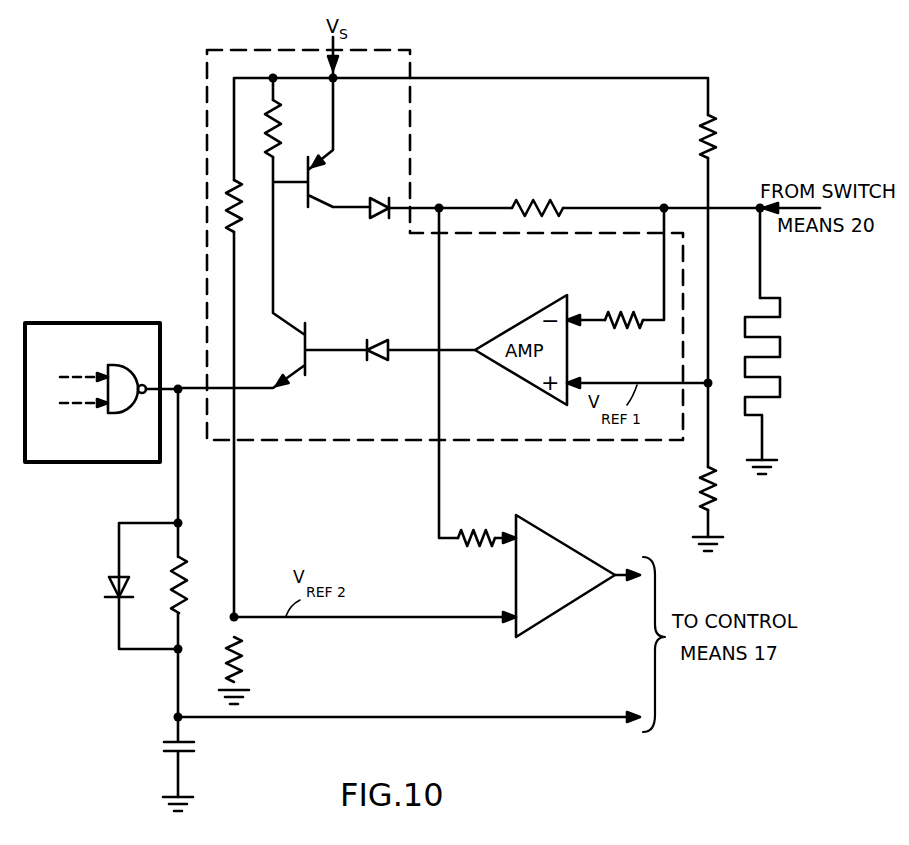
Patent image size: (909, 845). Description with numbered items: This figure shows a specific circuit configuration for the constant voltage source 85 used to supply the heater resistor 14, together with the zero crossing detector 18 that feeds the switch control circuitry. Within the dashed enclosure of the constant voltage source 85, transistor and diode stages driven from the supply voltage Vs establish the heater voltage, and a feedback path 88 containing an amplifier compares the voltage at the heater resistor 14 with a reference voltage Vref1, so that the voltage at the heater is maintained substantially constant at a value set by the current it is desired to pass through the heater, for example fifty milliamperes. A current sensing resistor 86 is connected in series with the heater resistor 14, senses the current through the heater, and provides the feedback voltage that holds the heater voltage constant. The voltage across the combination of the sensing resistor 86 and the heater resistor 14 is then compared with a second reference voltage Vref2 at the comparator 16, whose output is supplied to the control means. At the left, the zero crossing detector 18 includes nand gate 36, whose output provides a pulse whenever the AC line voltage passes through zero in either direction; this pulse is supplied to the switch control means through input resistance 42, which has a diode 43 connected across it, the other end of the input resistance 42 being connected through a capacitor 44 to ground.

The constant voltage source 85 is at (205, 92).
The current sensing resistor 86 is at (534, 203).
The feedback path 88 is at (424, 364).
The heater resistor 14 is at (785, 347).
The comparator 16 is at (558, 545).
The zero crossing detector 18 is at (120, 322).
The nand gate 36 is at (122, 413).
The input resistance 42 is at (186, 571).
The diode 43 is at (107, 585).
The capacitor 44 is at (194, 752).